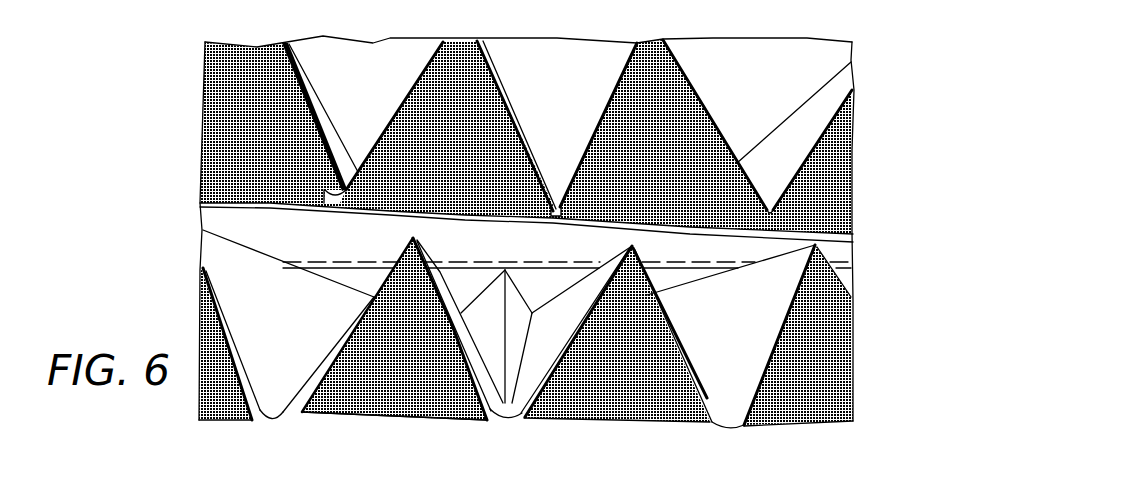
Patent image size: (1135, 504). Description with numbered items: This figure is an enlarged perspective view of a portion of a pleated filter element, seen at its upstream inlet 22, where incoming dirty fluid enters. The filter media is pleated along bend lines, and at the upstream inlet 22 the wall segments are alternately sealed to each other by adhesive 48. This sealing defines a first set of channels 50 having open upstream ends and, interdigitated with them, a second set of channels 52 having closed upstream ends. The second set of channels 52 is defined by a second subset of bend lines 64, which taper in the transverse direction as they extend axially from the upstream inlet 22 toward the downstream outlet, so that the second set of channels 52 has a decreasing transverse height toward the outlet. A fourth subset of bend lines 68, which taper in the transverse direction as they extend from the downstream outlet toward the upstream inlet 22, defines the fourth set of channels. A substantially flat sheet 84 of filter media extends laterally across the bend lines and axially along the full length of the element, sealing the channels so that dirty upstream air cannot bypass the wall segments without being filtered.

The upstream inlet 22 is at (872, 356).
The adhesive 48 is at (245, 120).
The first set of channels 50 is at (605, 62).
The second set of channels 52 is at (382, 390).
The second subset of bend lines 64 is at (614, 258).
The fourth subset of bend lines 68 is at (505, 278).
The substantially flat sheet 84 is at (842, 254).